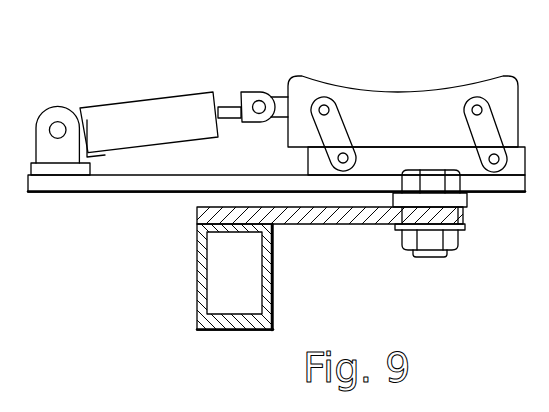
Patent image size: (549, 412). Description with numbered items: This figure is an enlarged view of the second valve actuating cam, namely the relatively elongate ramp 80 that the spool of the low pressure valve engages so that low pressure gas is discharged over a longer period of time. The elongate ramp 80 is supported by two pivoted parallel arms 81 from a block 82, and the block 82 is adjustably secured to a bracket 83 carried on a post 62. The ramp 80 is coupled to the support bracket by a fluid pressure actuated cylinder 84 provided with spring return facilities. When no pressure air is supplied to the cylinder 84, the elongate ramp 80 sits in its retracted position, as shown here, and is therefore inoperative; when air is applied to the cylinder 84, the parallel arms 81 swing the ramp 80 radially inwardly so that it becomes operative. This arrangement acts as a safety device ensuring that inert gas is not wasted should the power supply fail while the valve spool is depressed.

The post 62 is at (265, 300).
The elongate ramp 80 is at (358, 97).
The pivoted parallel arms 81 is at (342, 130).
The block 82 is at (445, 153).
The bracket 83 is at (336, 219).
The fluid pressure actuated cylinder 84 is at (135, 110).